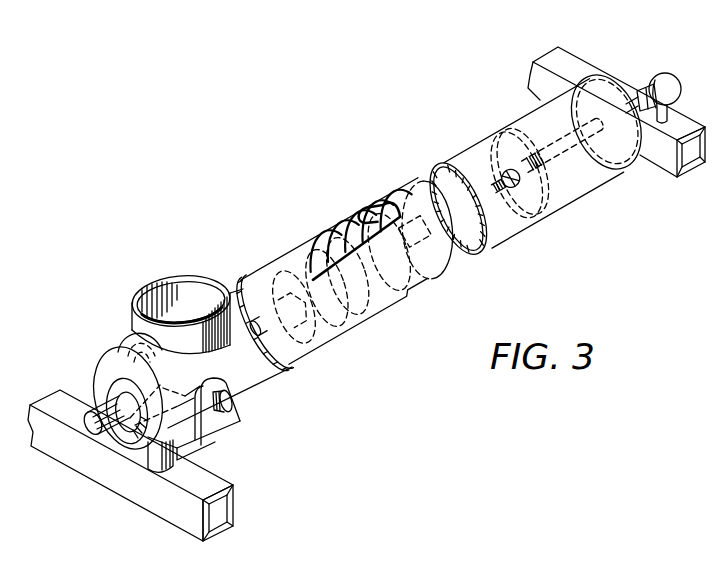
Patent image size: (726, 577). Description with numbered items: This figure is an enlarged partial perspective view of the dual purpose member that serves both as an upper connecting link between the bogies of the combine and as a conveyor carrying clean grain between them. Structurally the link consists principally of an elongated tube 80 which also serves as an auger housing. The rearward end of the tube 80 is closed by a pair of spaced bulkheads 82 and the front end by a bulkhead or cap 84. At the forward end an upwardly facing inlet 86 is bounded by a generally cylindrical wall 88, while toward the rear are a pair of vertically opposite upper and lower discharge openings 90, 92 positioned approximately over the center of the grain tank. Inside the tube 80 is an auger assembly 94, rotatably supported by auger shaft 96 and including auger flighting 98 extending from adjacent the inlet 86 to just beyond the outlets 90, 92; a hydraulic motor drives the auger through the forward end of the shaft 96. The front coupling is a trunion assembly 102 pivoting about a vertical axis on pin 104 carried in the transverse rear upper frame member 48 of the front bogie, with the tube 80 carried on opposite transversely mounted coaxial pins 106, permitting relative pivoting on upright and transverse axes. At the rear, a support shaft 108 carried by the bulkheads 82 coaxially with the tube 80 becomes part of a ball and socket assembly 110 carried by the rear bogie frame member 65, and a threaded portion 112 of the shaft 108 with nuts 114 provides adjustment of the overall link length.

The transverse rear upper frame member 48 is at (122, 494).
The transversely extending frame member 65 is at (533, 63).
The elongated tube 80 is at (458, 160).
The spaced bulkheads 82 is at (610, 170).
The bulkhead or cap 84 is at (118, 367).
The inlet 86 is at (184, 290).
The cylindrical wall 88 is at (133, 303).
The upper discharge opening 90 is at (362, 217).
The lower discharge opening 92 is at (406, 297).
The auger assembly 94 is at (316, 208).
The auger shaft 96 is at (88, 418).
The auger flighting 98 is at (306, 248).
The trunion assembly 102 is at (230, 457).
The pin 104 is at (157, 468).
The coaxial pins 106 is at (232, 403).
The support shaft 108 is at (540, 124).
The ball and socket assembly 110 is at (645, 58).
The threaded portion 112 is at (548, 134).
The nuts 114 is at (517, 228).